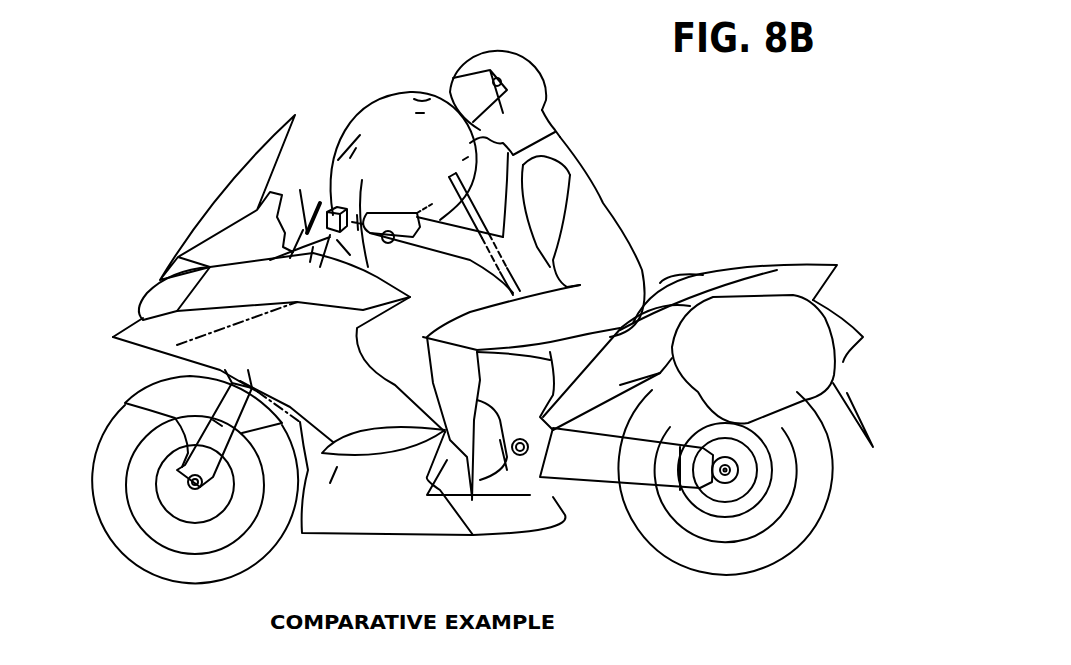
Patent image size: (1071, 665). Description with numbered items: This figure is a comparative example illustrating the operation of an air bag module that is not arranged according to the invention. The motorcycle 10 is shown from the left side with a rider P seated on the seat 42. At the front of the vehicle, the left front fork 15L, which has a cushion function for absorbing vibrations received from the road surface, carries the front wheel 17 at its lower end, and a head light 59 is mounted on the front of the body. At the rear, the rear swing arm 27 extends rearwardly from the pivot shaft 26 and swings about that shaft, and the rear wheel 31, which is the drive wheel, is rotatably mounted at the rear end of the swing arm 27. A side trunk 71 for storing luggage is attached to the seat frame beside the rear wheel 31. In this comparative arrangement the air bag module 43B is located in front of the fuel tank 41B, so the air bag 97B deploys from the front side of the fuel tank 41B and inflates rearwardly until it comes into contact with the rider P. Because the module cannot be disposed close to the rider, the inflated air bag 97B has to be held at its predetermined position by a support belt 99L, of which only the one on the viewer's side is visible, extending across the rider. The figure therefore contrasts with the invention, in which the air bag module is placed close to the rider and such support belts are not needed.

The motorcycle 10 is at (225, 162).
The front wheel 17 is at (127, 542).
The left front fork 15L is at (163, 387).
The head light 59 is at (153, 302).
The air bag module 43B is at (293, 253).
The fuel tank 41B is at (362, 180).
The air bag 97B is at (420, 99).
The rider P is at (597, 208).
The support belt 99L is at (480, 210).
The seat 42 is at (672, 290).
The side trunk 71 is at (802, 365).
The rear wheel 31 is at (787, 533).
The rear swing arm 27 is at (603, 463).
The pivot shaft 26 is at (520, 457).